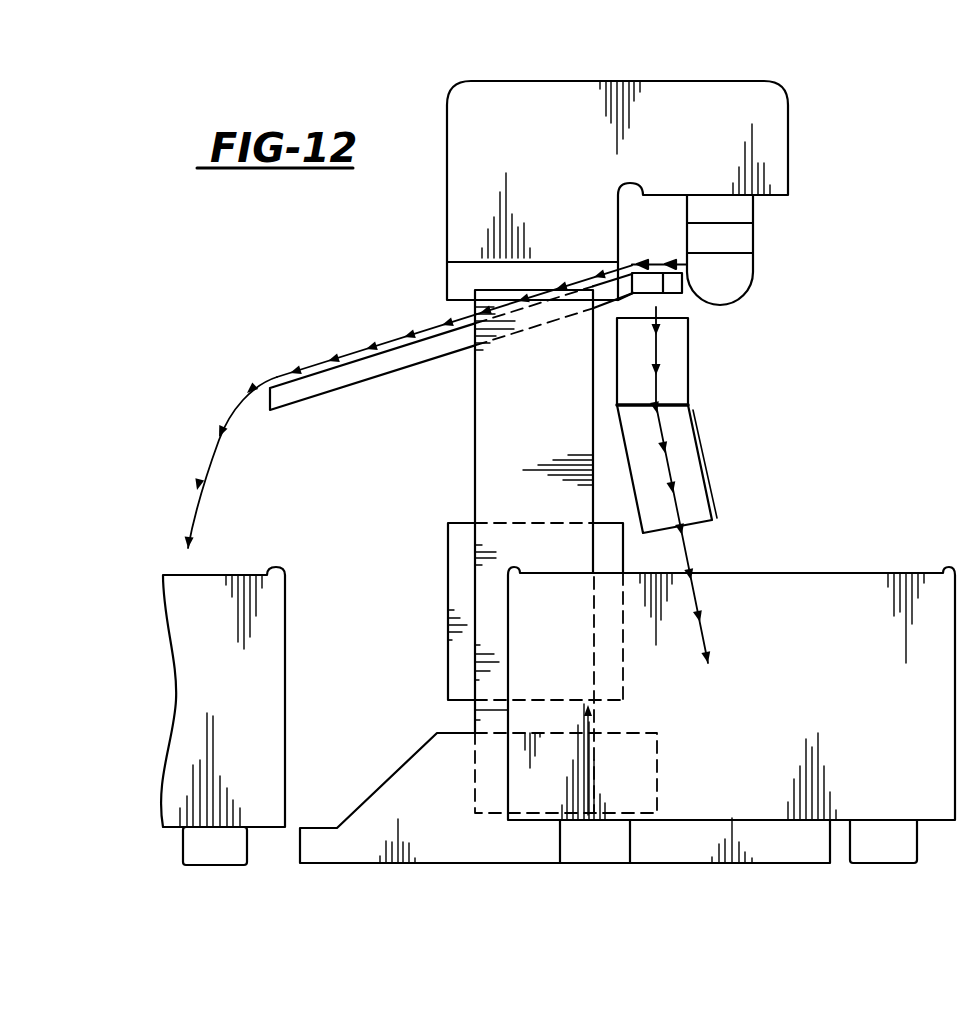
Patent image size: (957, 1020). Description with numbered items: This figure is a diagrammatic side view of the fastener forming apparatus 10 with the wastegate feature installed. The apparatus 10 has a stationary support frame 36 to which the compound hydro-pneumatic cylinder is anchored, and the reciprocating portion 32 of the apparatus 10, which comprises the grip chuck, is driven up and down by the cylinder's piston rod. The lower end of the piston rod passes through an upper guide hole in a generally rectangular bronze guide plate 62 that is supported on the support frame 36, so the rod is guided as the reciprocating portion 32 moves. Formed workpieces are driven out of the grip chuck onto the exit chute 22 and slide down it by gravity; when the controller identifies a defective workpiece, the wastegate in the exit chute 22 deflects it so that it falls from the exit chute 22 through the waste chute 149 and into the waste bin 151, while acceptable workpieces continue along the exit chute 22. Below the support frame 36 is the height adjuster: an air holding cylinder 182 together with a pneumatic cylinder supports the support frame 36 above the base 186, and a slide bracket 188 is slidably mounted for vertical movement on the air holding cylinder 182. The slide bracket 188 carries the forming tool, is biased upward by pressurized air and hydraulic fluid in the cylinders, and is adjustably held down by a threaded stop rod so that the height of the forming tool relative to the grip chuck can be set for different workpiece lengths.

The fastener forming apparatus 10 is at (812, 135).
The support frame 36 is at (457, 277).
The guide plate 62 is at (745, 240).
The reciprocating portion 32 is at (763, 272).
The exit chute 22 is at (368, 368).
The air holding cylinder 182 is at (490, 480).
The slide bracket 188 is at (458, 568).
The waste chute 149 is at (688, 465).
The waste bin 151 is at (818, 610).
The base 186 is at (512, 848).